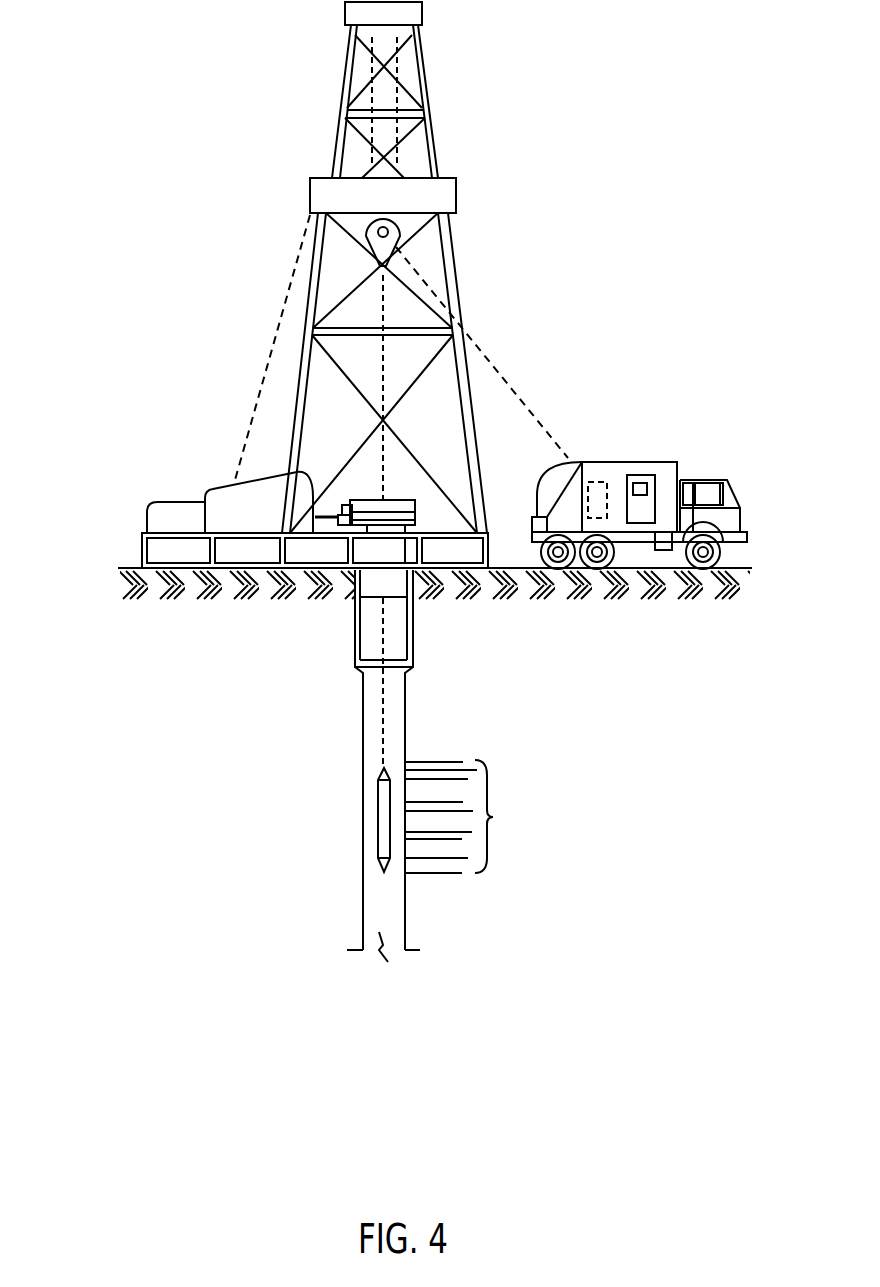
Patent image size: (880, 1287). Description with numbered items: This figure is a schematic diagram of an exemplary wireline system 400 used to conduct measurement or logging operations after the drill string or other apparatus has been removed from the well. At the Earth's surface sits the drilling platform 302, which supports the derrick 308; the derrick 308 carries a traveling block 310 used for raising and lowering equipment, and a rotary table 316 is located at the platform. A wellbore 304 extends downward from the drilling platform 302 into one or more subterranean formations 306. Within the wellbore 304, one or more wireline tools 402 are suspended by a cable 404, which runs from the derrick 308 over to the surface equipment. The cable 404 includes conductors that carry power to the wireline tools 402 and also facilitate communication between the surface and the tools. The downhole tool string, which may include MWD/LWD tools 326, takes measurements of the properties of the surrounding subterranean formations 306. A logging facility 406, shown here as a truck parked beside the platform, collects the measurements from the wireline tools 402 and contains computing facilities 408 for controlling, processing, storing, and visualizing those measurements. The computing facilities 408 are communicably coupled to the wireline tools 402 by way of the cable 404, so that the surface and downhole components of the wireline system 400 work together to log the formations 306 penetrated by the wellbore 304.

The drilling platform 302 is at (142, 542).
The wellbore 304 is at (405, 724).
The subterranean formations 306 is at (470, 816).
The derrick 308 is at (427, 92).
The traveling block 310 is at (392, 230).
The rotary table 316 is at (398, 497).
The MWD/LWD tools 326 is at (380, 842).
The wireline system 400 is at (399, 482).
The wireline tools 402 is at (366, 795).
The cable 404 is at (508, 385).
The logging facility 406 is at (675, 463).
The computing facilities 408 is at (603, 462).